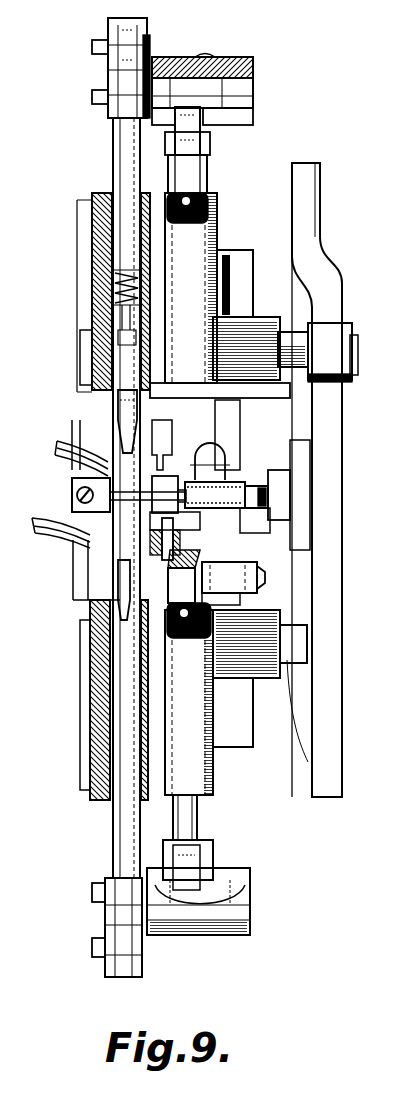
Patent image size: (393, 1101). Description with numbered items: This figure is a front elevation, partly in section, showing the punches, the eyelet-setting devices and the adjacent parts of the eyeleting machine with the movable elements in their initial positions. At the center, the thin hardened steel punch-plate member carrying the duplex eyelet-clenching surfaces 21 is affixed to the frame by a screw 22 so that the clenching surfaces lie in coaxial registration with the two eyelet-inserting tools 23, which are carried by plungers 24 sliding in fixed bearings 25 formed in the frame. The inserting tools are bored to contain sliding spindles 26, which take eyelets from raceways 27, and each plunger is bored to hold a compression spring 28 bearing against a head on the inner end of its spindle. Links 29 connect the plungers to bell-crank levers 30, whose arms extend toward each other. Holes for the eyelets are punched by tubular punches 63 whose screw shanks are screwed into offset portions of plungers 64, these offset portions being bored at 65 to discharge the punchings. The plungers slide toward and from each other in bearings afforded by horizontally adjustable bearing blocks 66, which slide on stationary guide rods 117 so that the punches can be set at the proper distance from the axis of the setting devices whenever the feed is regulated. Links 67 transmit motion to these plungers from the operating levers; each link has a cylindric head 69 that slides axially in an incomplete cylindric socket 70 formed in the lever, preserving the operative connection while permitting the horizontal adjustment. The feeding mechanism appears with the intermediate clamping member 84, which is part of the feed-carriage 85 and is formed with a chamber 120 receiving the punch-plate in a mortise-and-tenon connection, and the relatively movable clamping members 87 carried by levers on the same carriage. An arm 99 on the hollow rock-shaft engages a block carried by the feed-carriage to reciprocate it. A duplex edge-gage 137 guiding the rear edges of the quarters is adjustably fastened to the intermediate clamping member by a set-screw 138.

The eyelet-clenching surfaces 21 is at (72, 483).
The screw 22 is at (76, 500).
The eyelet-inserting tools 23 is at (120, 418).
The plungers 24 is at (118, 237).
The fixed bearings 25 is at (92, 213).
The sliding spindles 26 is at (100, 447).
The raceways 27 is at (57, 447).
The compression spring 28 is at (116, 290).
The links 29 is at (112, 75).
The bell-crank levers 30 is at (108, 27).
The tubular punches 63 is at (160, 478).
The plungers 64 is at (207, 183).
The bore 65 is at (175, 562).
The bearing blocks 66 is at (217, 236).
The links 67 is at (205, 130).
The cylindric heads 69 is at (215, 57).
The cylindric sockets 70 is at (253, 95).
The intermediate clamping member 84 is at (232, 478).
The feed-carriage 85 is at (228, 400).
The relatively movable clamping members 87 is at (232, 462).
The arm 99 is at (265, 578).
The stationary guide rods 117 is at (298, 347).
The chamber 120 is at (255, 492).
The duplex edge-gage 137 is at (144, 486).
The set-screw 138 is at (272, 493).